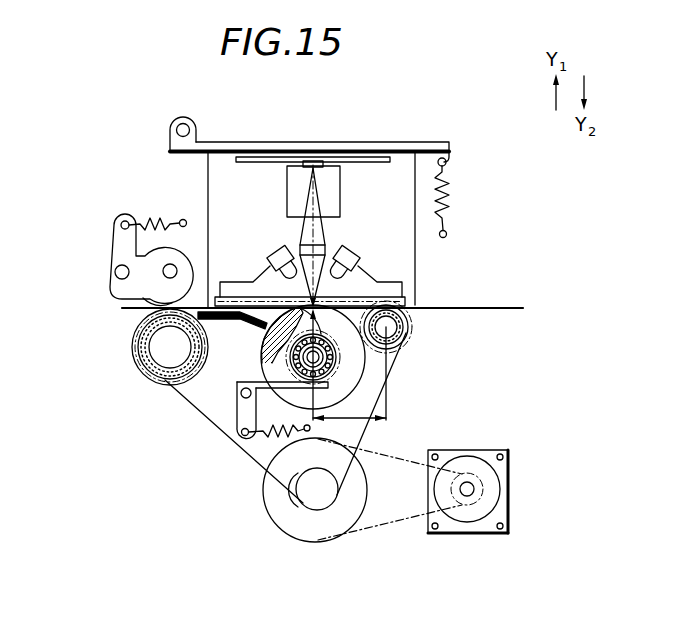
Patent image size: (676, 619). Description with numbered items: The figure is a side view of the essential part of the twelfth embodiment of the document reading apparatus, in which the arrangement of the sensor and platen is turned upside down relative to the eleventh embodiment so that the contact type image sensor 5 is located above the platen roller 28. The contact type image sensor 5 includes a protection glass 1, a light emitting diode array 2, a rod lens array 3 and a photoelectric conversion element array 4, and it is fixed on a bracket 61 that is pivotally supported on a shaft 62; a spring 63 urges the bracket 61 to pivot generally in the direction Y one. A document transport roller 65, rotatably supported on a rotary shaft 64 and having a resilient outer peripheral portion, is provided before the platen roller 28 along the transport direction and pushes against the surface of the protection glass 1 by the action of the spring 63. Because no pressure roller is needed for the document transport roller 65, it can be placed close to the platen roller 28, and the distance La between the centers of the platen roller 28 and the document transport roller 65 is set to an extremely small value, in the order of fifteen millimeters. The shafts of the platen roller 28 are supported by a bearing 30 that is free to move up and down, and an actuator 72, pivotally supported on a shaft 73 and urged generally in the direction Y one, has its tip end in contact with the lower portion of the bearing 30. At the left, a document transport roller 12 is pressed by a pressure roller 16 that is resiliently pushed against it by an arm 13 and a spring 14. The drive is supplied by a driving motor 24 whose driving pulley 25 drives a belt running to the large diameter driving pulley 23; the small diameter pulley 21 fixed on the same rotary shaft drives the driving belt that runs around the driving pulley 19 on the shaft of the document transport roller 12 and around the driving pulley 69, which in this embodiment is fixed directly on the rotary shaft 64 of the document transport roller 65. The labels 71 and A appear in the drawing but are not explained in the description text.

The protection glass 1 is at (241, 323).
The light emitting diode array 2 is at (345, 253).
The rod lens array 3 is at (300, 228).
The photoelectric conversion element array 4 is at (325, 165).
The contact type image sensor 5 is at (372, 225).
The document transport roller 12 is at (148, 336).
The arm 13 is at (112, 235).
The spring 14 is at (161, 213).
The pressure roller 16 is at (145, 297).
The driving pulley 19 is at (180, 401).
The small diameter pulley 21 is at (296, 508).
The large diameter driving pulley 23 is at (266, 511).
The driving motor 24 is at (510, 486).
The driving pulley 25 is at (458, 500).
The platen roller 28 is at (355, 448).
The bearing 30 is at (328, 358).
The bracket 61 is at (260, 147).
The shaft 62 is at (181, 123).
The spring 63 is at (450, 197).
The rotary shaft 64 is at (392, 331).
The document transport roller 65 is at (405, 314).
The driving pulley 69 is at (403, 356).
The spring 71 is at (268, 438).
The actuator 72 is at (236, 412).
The shaft 73 is at (236, 388).
The reading position A is at (290, 328).
The distance La is at (349, 409).